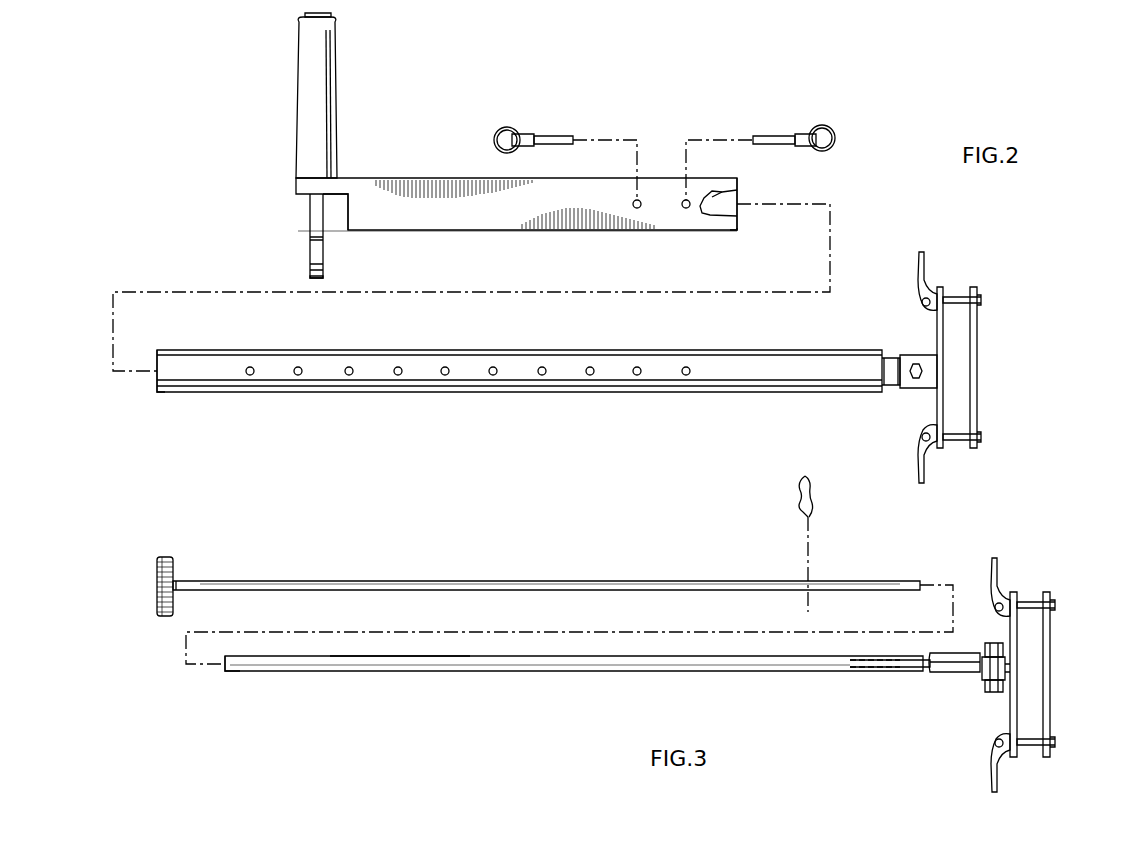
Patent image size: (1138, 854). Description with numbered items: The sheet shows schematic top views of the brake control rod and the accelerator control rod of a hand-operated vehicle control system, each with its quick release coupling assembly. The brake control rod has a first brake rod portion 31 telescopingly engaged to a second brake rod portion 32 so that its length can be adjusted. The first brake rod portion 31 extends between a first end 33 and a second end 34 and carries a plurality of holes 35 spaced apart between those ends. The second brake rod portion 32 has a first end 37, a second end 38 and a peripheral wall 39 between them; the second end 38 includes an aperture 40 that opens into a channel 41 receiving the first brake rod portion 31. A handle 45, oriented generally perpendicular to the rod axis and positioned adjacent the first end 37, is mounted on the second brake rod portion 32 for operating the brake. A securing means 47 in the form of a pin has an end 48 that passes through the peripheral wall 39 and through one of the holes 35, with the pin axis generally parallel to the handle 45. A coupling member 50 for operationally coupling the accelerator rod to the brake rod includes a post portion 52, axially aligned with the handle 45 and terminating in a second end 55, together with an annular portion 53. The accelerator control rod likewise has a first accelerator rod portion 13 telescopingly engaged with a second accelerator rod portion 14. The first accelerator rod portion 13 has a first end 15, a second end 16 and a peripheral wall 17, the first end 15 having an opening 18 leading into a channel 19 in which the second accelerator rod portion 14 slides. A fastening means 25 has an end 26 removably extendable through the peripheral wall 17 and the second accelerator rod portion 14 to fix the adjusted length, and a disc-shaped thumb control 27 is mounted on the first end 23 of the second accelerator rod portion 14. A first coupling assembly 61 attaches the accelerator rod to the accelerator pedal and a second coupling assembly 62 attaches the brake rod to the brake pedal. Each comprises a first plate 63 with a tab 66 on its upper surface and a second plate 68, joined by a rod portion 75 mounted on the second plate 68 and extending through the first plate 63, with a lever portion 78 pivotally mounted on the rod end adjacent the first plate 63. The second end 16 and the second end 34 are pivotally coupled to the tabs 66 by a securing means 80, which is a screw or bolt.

In FIG. 3, the first accelerator rod portion 13 is at (596, 666).
In FIG. 3, the second accelerator rod portion 14 is at (536, 580).
In FIG. 3, the first end 15 is at (240, 673).
In FIG. 3, the second end 16 is at (985, 655).
In FIG. 3, the peripheral wall 17 is at (400, 666).
In FIG. 3, the opening 18 is at (220, 664).
In FIG. 3, the channel 19 is at (875, 664).
In FIG. 3, the first end 23 is at (178, 581).
In FIG. 3, the fastening means 25 is at (796, 484).
In FIG. 3, the end 26 is at (810, 518).
In FIG. 3, the thumb control 27 is at (157, 580).
In FIG. 2, the first brake rod portion 31 is at (672, 392).
In FIG. 2, the second brake rod portion 32 is at (440, 192).
In FIG. 2, the first end 33 is at (170, 392).
In FIG. 2, the second end 34 is at (895, 356).
In FIG. 2, the holes 35 is at (445, 376).
In FIG. 2, the first end 37 is at (352, 228).
In FIG. 2, the second end 38 is at (740, 225).
In FIG. 2, the peripheral wall 39 is at (498, 212).
In FIG. 2, the aperture 40 is at (741, 197).
In FIG. 2, the channel 41 is at (738, 180).
In FIG. 2, the handle 45 is at (320, 97).
In FIG. 2, the securing means 47 is at (775, 132).
In FIG. 2, the end 48 is at (752, 137).
In FIG. 2, the coupling member 50 is at (280, 250).
In FIG. 2, the post portion 52 is at (313, 217).
In FIG. 2, the annular portion 53 is at (300, 277).
In FIG. 2, the second end 55 is at (313, 236).
In FIG. 3, the first coupling assembly 61 is at (1013, 672).
In FIG. 2, the second coupling assembly 62 is at (1015, 371).
In FIG. 2, the first plate 63 is at (941, 342).
In FIG. 3, the first plate 63 is at (1014, 692).
In FIG. 2, the tab 66 is at (925, 382).
In FIG. 3, the tab 66 is at (990, 690).
In FIG. 2, the second plate 68 is at (975, 387).
In FIG. 2, the rod portion 75 is at (958, 300).
In FIG. 2, the lever portion 78 is at (930, 278).
In FIG. 3, the lever portion 78 is at (1007, 580).
In FIG. 3, the securing means 80 is at (996, 655).